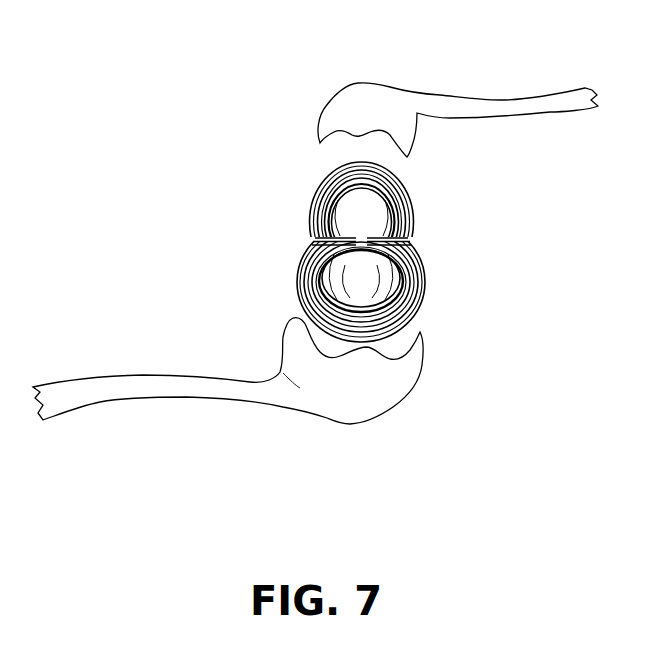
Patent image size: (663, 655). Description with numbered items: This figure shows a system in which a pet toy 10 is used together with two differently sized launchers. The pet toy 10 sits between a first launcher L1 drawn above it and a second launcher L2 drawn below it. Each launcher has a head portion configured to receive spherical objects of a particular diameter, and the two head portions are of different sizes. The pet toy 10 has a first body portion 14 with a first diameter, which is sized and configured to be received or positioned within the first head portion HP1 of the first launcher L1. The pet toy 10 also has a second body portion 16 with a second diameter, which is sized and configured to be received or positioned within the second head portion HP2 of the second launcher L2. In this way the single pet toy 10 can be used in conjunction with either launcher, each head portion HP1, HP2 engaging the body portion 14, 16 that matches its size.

The pet toy 10 is at (260, 241).
The first body portion 14 is at (411, 207).
The second body portion 16 is at (411, 267).
The first head portion HP1 is at (393, 86).
The second head portion HP2 is at (323, 417).
The first launcher L1 is at (294, 90).
The second launcher L2 is at (449, 414).